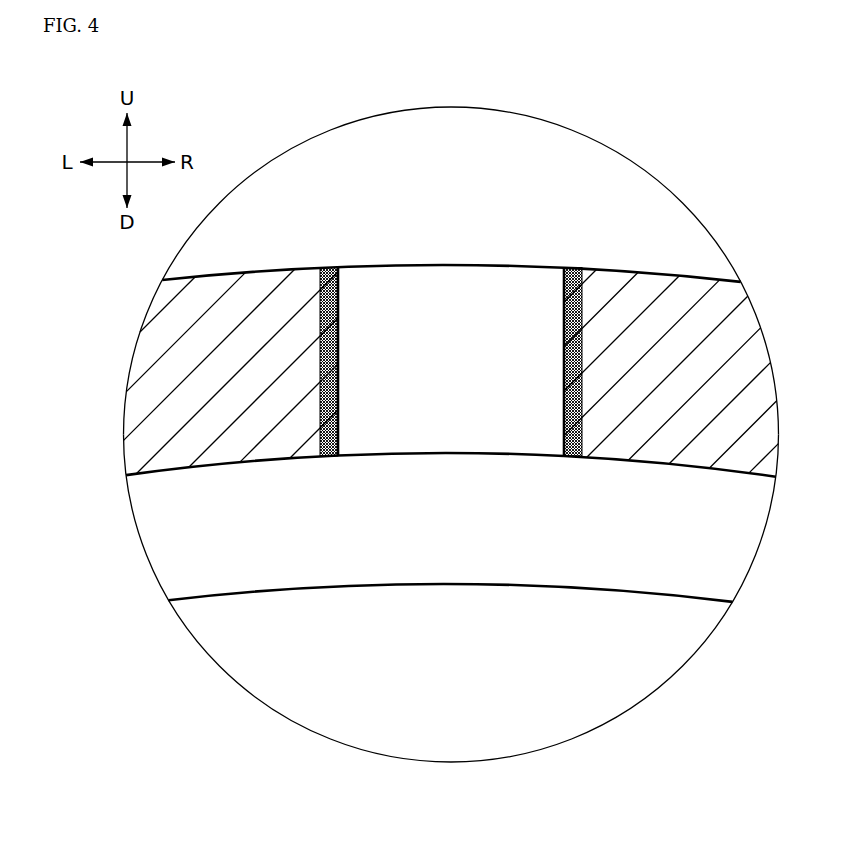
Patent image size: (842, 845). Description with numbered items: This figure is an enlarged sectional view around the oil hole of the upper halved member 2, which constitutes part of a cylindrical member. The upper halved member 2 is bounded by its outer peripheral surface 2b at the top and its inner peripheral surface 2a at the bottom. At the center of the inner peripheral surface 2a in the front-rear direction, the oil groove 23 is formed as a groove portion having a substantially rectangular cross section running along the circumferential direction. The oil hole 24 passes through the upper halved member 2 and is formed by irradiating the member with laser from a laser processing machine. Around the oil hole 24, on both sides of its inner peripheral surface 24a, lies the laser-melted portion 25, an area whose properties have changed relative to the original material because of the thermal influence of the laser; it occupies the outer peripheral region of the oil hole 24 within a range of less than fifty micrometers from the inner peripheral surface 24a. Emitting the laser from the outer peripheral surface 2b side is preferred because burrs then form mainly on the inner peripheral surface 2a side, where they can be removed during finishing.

The upper halved member 2 is at (675, 240).
The inner peripheral surface 2a is at (452, 588).
The outer peripheral surface 2b is at (268, 271).
The oil groove 23 is at (217, 468).
The oil hole 24 is at (467, 298).
The inner peripheral surface of the oil hole 24a is at (340, 343).
The laser-melted portion 25 is at (580, 306).